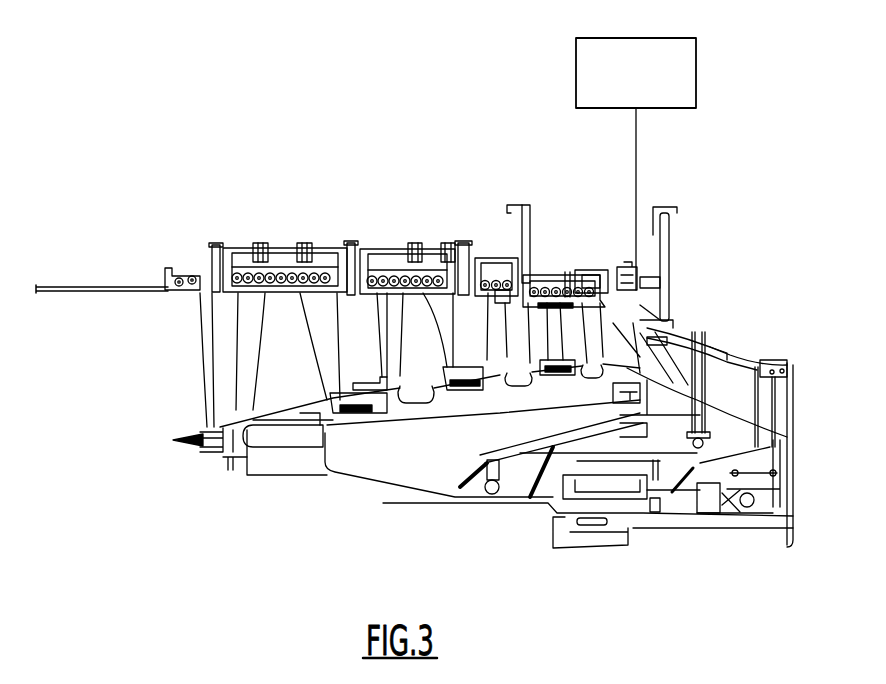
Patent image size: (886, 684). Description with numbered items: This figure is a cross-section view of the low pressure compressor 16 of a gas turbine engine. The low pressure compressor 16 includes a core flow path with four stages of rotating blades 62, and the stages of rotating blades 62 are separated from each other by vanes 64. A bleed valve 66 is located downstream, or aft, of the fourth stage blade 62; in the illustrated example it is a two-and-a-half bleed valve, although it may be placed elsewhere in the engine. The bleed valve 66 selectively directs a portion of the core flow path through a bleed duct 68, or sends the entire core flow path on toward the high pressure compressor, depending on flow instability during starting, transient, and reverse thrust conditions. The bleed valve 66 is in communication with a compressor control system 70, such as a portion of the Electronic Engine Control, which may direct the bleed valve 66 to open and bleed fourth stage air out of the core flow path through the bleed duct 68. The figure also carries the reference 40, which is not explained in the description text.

The low pressure compressor 16 is at (292, 168).
The airflow sensor 40 is at (579, 312).
The rotating blades 62 is at (277, 308).
The vanes 64 is at (202, 382).
The bleed valve 66 is at (648, 277).
The bleed duct 68 is at (658, 300).
The compressor control system 70 is at (576, 68).